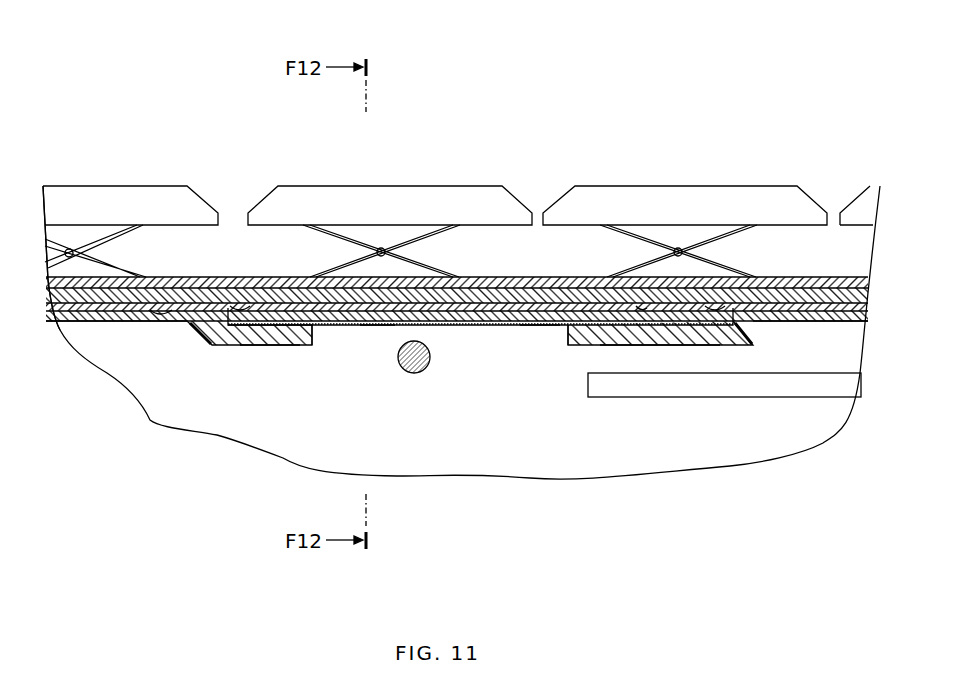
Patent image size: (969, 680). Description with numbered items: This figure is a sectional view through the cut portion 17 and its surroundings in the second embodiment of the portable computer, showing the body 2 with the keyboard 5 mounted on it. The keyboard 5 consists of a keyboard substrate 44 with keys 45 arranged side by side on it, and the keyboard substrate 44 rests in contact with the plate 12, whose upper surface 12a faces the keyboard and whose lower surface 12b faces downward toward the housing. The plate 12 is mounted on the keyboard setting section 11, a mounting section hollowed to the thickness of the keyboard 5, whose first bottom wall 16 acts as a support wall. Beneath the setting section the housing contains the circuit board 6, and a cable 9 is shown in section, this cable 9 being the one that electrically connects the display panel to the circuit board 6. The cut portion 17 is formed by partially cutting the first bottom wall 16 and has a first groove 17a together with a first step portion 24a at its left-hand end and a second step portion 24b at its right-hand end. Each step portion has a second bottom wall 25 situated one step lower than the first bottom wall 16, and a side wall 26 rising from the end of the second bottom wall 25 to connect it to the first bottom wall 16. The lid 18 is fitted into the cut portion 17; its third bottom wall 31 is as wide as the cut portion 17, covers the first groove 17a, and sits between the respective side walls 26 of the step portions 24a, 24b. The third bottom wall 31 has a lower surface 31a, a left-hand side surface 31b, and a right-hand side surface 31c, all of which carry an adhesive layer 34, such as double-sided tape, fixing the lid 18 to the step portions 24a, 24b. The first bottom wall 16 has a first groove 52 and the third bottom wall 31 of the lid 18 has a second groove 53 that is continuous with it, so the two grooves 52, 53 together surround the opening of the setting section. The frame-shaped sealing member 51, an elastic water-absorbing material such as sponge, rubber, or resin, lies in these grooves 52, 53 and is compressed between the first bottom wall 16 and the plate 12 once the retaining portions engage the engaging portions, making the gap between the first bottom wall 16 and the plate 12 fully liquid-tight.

The body 2 is at (101, 76).
The keyboard 5 is at (227, 270).
The circuit board 6 is at (632, 385).
The cable 9 is at (413, 373).
The keyboard setting section 11 is at (160, 333).
The plate 12 is at (58, 323).
The upper surface of the plate 12a is at (69, 249).
The lower surface of the plate 12b is at (102, 323).
The first bottom wall 16 is at (806, 320).
The cut portion 17 is at (563, 342).
The first groove 17a is at (317, 333).
The lid 18 is at (539, 332).
The first step portion 24a is at (257, 357).
The second step portion 24b is at (578, 356).
The second bottom wall 25 is at (283, 337).
The side wall 26 is at (210, 338).
The third bottom wall 31 is at (370, 295).
The lower surface 31a is at (477, 328).
The left-hand side surface 31b is at (240, 312).
The right-hand side surface 31c is at (713, 310).
The adhesive layer 34 is at (377, 321).
The keyboard substrate 44 is at (831, 287).
The keys 45 is at (613, 202).
The sealing member 51 is at (432, 303).
The first groove 52 is at (166, 310).
The second groove 53 is at (647, 310).